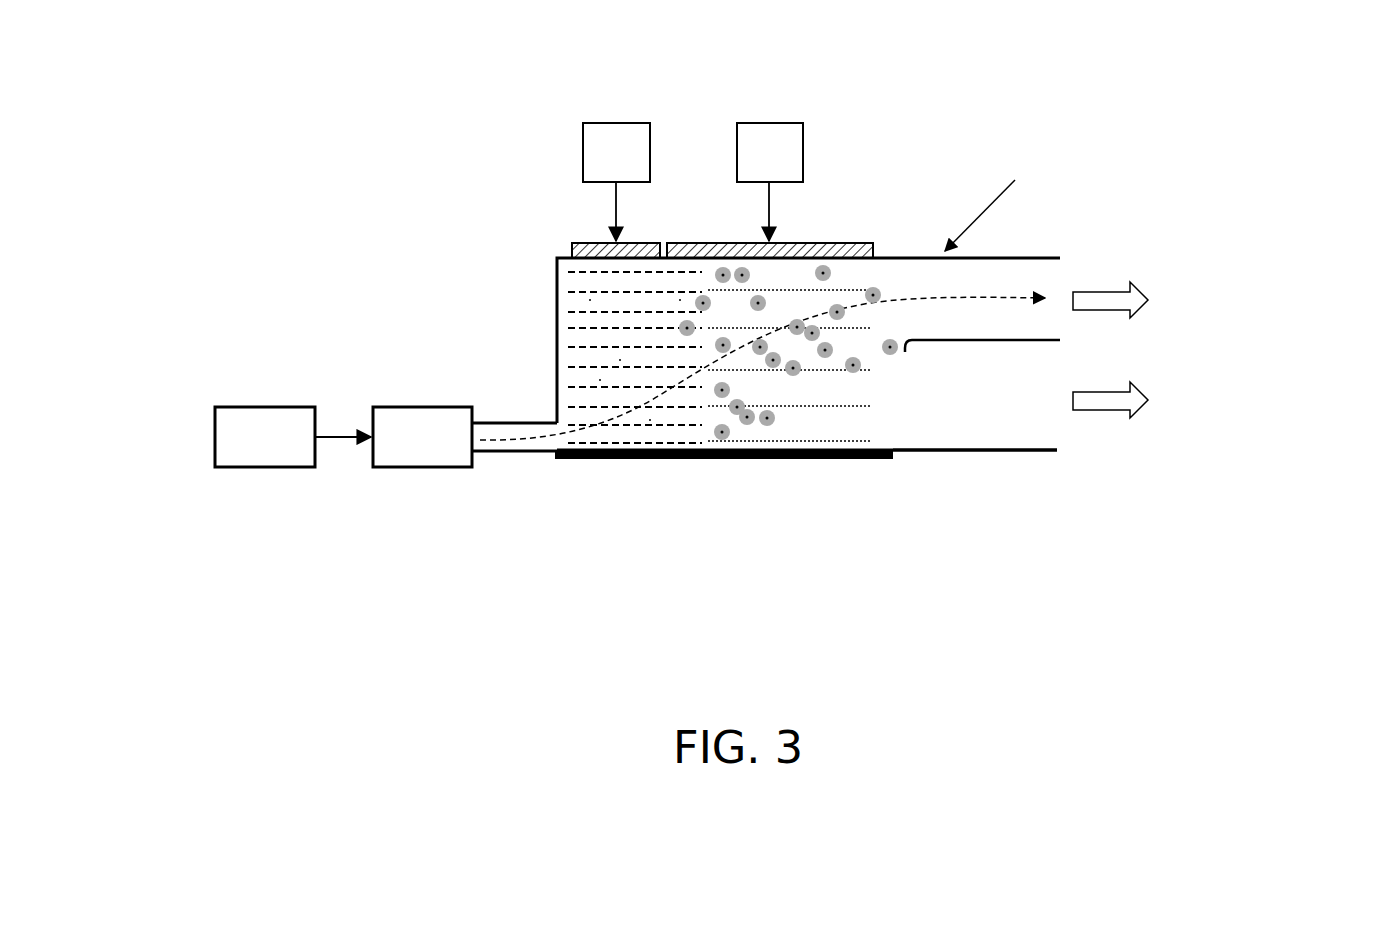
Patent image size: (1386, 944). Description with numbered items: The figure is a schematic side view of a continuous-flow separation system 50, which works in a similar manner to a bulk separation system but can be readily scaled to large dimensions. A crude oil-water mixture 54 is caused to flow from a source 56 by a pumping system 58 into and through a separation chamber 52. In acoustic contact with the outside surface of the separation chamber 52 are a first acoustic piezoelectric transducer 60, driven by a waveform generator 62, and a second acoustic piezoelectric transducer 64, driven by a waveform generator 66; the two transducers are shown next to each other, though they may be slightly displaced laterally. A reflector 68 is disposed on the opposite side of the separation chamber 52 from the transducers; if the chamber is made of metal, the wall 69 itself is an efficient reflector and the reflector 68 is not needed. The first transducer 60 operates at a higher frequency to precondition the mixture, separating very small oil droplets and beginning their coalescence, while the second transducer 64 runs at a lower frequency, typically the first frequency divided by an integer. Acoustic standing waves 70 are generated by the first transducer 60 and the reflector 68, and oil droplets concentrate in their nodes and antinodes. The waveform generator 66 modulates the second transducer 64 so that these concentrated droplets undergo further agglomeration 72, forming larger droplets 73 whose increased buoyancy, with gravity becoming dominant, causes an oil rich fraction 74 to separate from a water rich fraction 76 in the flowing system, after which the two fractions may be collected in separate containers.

The continuous-flow separation system 50 is at (880, 130).
The separation chamber 52 is at (558, 254).
The crude oil-water mixture 54 is at (512, 447).
The source 56 is at (249, 453).
The pumping system 58 is at (406, 453).
The first acoustic piezoelectric transducer 60 is at (600, 239).
The waveform generator 62 is at (600, 169).
The second acoustic piezoelectric transducer 64 is at (742, 239).
The waveform generator 66 is at (754, 169).
The reflector 68 is at (827, 463).
The wall 69 is at (977, 452).
The acoustic standing waves 70 is at (576, 312).
The agglomeration 72 is at (633, 342).
The larger droplets 73 is at (767, 357).
The oil rich fraction 74 is at (941, 291).
The water rich fraction 76 is at (941, 416).